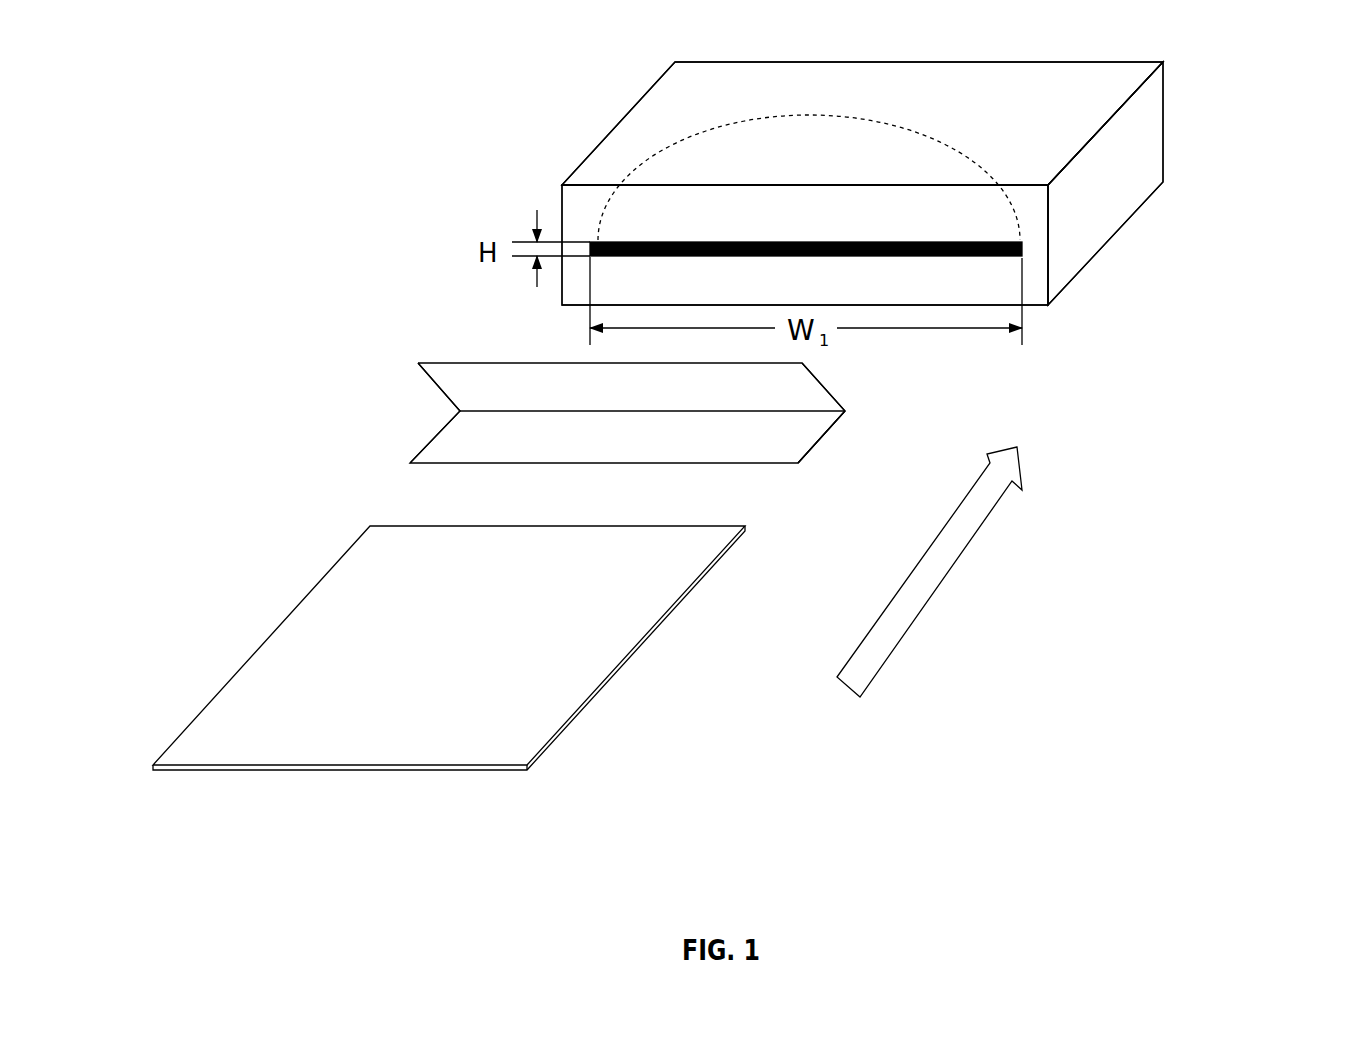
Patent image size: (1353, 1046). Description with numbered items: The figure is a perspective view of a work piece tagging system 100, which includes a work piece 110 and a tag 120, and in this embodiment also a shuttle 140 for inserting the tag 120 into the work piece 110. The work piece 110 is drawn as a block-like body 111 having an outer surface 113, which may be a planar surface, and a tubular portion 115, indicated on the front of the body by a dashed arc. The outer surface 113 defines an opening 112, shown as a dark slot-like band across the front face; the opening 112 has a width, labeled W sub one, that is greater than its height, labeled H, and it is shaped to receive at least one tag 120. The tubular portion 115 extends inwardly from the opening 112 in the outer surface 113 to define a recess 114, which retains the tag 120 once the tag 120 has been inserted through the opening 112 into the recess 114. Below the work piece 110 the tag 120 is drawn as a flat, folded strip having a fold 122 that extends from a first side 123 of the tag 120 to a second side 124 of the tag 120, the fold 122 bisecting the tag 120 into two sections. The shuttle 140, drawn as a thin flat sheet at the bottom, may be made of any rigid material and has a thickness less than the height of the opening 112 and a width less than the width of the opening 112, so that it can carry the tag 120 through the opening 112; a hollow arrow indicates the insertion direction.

The work piece tagging system 100 is at (233, 162).
The work piece 110 is at (562, 96).
The body 111 is at (1163, 127).
The opening 112 is at (1024, 251).
The outer surface 113 is at (1040, 287).
The recess 114 is at (893, 162).
The tubular portion 115 is at (620, 215).
The tag 120 is at (641, 436).
The fold 122 is at (845, 411).
The first side 123 is at (423, 420).
The second side 124 is at (835, 443).
The shuttle 140 is at (582, 657).